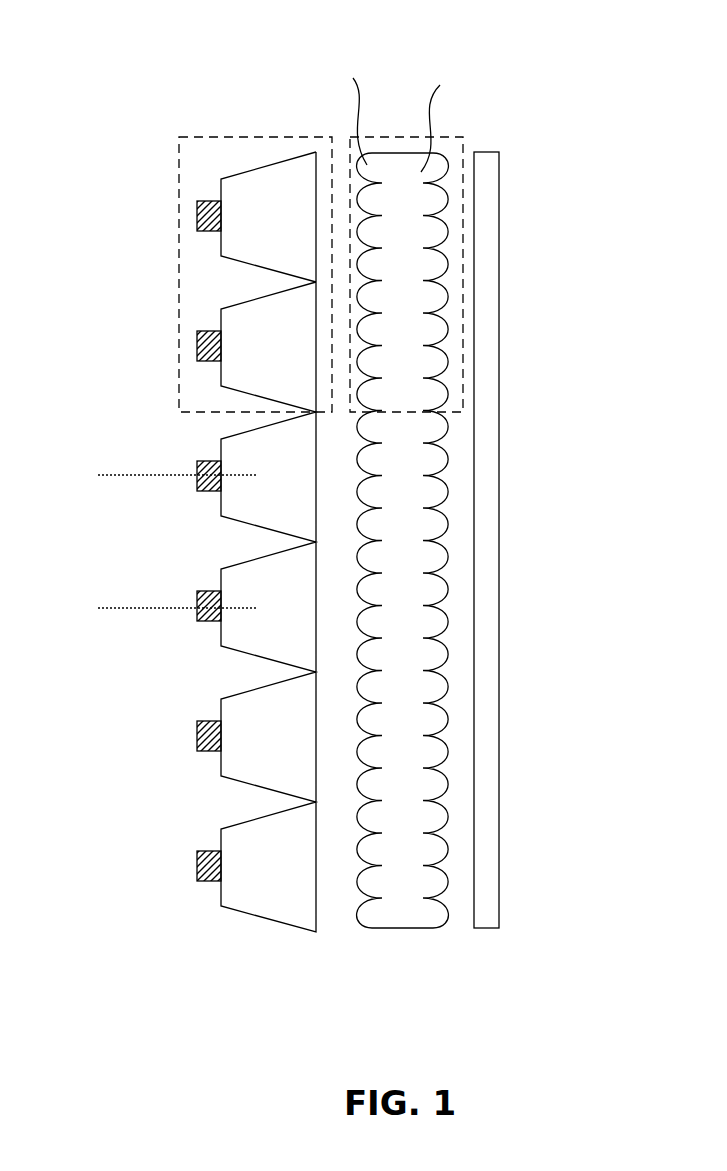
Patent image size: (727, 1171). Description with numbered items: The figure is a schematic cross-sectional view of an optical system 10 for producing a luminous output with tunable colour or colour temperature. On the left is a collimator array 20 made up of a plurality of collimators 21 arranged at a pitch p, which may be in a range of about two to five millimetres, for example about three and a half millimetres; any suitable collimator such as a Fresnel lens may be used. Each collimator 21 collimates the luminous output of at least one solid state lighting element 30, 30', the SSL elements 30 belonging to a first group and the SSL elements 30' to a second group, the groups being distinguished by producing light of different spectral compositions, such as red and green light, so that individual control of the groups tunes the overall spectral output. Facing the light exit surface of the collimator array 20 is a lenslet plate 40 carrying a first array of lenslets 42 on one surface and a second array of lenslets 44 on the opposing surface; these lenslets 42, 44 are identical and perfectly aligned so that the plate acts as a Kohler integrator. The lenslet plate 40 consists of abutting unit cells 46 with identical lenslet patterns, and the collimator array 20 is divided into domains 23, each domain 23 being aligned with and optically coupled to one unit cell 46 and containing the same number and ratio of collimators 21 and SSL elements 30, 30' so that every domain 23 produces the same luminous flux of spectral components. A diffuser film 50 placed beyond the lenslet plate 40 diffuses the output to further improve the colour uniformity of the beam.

The optical system 10 is at (383, 1040).
The collimator array 20 is at (268, 112).
The collimator 21 is at (256, 188).
The domain 23 is at (178, 137).
The solid state lighting element 30 is at (163, 212).
The solid state lighting element 30' is at (154, 341).
The lenslet plate 40 is at (402, 112).
The first array of lenslets 42 is at (350, 104).
The second array of lenslets 44 is at (442, 111).
The unit cell 46 is at (464, 275).
The diffuser film 50 is at (493, 553).
The pitch p is at (111, 477).